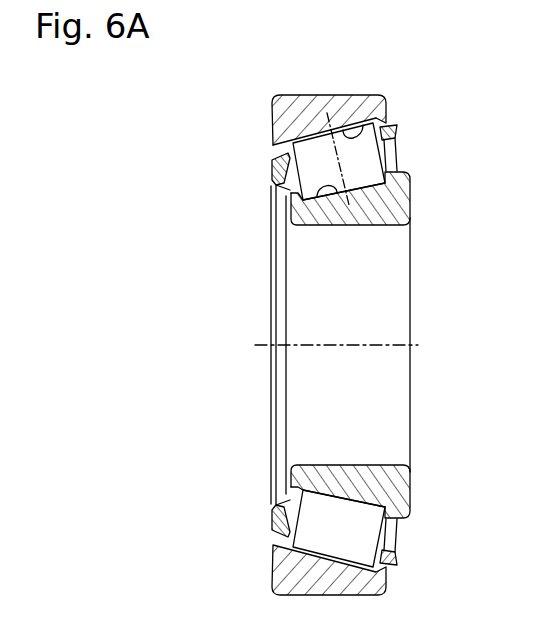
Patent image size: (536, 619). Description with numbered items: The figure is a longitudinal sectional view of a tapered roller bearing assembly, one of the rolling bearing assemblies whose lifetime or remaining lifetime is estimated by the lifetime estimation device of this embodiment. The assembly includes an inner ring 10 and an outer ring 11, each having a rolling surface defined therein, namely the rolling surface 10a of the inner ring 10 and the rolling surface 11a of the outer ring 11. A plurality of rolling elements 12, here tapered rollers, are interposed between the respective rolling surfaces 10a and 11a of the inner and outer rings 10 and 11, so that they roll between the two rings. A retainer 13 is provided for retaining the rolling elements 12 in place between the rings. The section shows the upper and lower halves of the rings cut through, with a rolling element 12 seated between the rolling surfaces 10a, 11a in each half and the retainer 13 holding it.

The inner ring 10 is at (387, 210).
The rolling surface 10a is at (335, 196).
The outer ring 11 is at (310, 104).
The rolling surface 11a is at (368, 112).
The rolling elements 12 is at (343, 528).
The retainer 13 is at (395, 133).